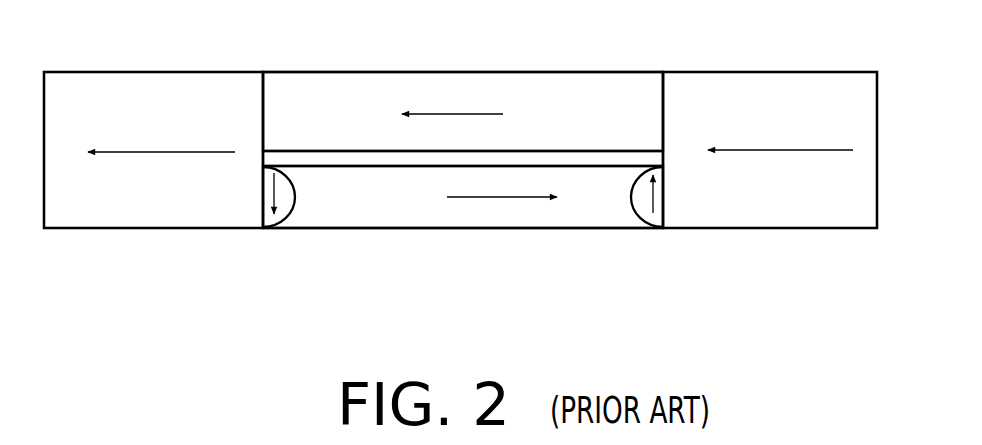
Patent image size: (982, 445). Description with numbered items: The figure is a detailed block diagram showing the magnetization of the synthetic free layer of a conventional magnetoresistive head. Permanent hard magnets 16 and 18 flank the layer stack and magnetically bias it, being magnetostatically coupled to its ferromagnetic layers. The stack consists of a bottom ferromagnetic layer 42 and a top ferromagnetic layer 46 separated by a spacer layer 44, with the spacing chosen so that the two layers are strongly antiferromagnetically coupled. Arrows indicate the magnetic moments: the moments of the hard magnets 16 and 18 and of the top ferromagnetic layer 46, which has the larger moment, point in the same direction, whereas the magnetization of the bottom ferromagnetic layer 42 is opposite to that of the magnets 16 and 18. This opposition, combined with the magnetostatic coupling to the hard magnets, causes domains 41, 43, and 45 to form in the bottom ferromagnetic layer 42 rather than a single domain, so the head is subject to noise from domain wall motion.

The hard magnet 16 is at (750, 72).
The hard magnet 18 is at (130, 72).
The domain 41 is at (297, 200).
The bottom ferromagnetic layer 42 is at (665, 287).
The domain 43 is at (632, 197).
The spacer layer 44 is at (350, 151).
The domain 45 is at (507, 229).
The top ferromagnetic layer 46 is at (533, 72).